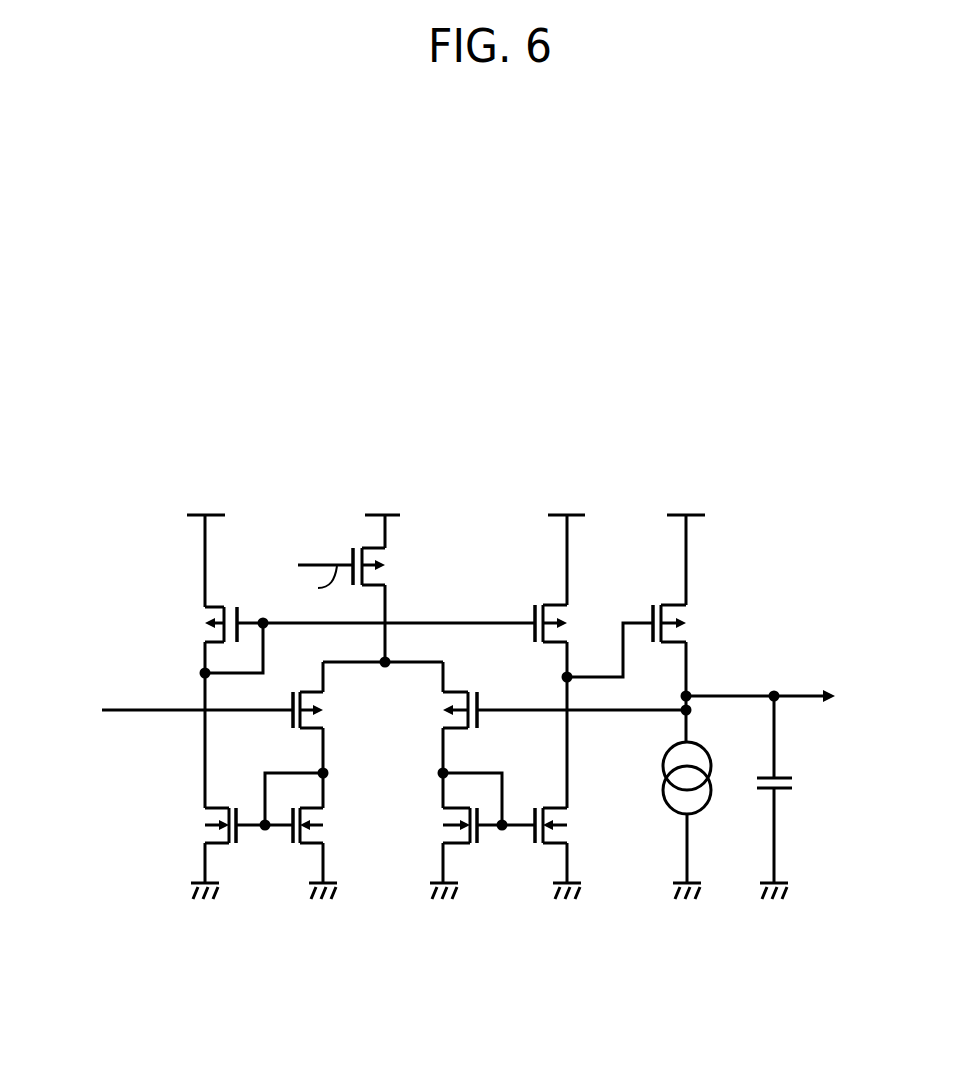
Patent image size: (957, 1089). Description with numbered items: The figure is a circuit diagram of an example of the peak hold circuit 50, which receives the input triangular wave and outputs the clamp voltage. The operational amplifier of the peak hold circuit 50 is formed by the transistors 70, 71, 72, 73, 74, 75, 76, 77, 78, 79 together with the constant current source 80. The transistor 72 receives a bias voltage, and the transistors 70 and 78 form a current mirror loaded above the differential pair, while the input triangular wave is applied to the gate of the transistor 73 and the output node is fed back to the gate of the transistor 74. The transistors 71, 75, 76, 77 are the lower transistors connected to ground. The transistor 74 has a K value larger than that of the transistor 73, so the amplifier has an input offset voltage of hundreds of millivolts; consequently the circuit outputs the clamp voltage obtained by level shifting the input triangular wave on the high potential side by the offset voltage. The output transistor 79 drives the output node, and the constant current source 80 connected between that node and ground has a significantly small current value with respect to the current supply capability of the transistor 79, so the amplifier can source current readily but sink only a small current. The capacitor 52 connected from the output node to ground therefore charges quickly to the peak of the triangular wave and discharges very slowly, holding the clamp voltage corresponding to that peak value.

The peak hold circuit 50 is at (523, 443).
The capacitor 52 is at (782, 772).
The transistor 70 is at (227, 602).
The transistor 71 is at (200, 828).
The transistor 72 is at (353, 542).
The transistor 73 is at (287, 722).
The transistor 74 is at (483, 722).
The transistor 75 is at (328, 833).
The transistor 76 is at (440, 818).
The transistor 77 is at (572, 826).
The transistor 78 is at (545, 648).
The transistor 79 is at (660, 600).
The constant current source 80 is at (662, 770).